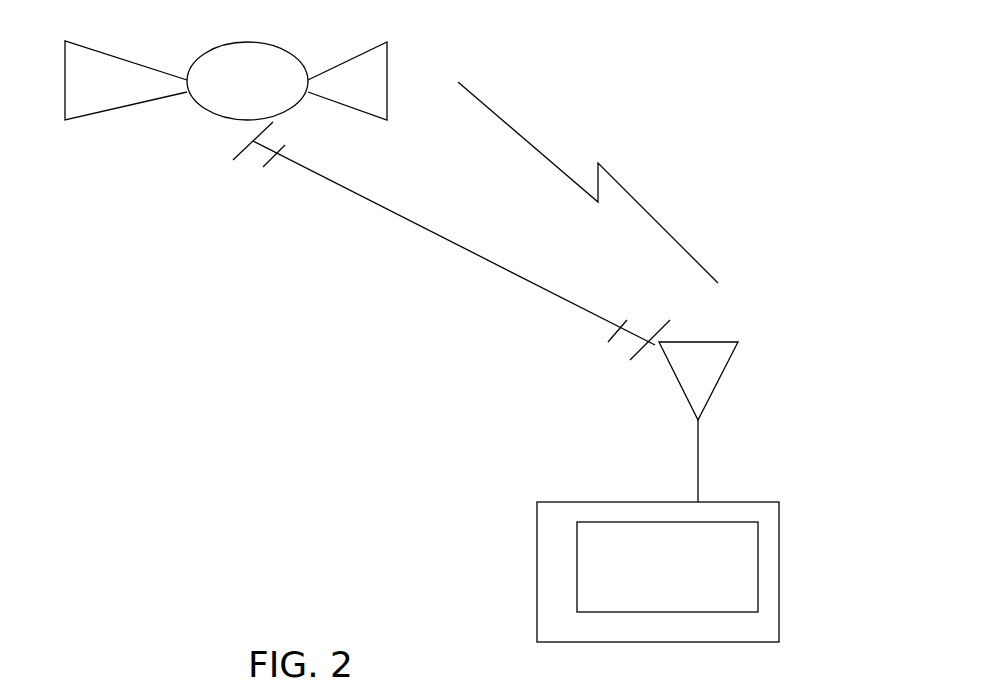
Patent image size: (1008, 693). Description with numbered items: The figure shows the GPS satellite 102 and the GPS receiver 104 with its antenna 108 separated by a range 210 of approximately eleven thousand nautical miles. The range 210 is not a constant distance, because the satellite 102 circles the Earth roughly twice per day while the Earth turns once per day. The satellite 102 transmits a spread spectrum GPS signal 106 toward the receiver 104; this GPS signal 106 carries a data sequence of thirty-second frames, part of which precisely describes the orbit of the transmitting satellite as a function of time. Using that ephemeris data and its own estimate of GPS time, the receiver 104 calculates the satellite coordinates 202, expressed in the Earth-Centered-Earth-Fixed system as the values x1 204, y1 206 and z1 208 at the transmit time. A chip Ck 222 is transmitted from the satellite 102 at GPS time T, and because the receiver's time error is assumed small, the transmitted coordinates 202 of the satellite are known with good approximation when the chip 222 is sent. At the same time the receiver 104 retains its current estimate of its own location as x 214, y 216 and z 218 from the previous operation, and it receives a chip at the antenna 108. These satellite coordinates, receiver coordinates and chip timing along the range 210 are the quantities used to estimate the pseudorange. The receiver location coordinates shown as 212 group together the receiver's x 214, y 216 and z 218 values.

The GPS satellite 102 is at (270, 96).
The GPS receiver 104 is at (600, 500).
The GPS signal 106 is at (638, 200).
The antenna 108 is at (728, 342).
The satellite coordinates 202 is at (115, 226).
The x coordinate 204 is at (33, 217).
The y coordinate 206 is at (68, 232).
The z coordinate 208 is at (112, 212).
The range 210 is at (450, 242).
The receiver coordinates 212 is at (436, 451).
The receiver x coordinate 214 is at (355, 442).
The receiver y coordinate 216 is at (393, 458).
The receiver z coordinate 218 is at (427, 438).
The chip Ck 222 is at (257, 153).